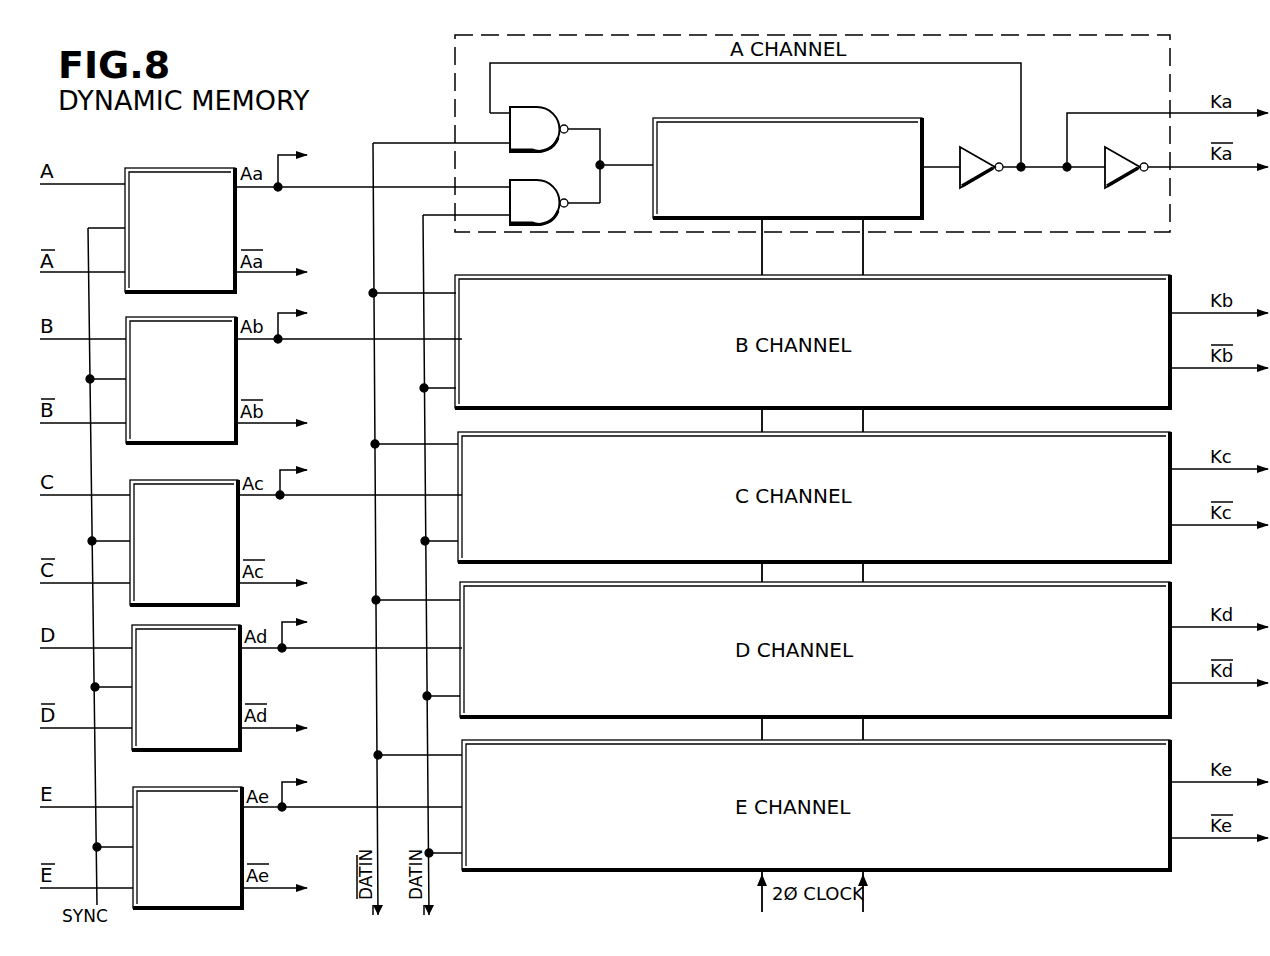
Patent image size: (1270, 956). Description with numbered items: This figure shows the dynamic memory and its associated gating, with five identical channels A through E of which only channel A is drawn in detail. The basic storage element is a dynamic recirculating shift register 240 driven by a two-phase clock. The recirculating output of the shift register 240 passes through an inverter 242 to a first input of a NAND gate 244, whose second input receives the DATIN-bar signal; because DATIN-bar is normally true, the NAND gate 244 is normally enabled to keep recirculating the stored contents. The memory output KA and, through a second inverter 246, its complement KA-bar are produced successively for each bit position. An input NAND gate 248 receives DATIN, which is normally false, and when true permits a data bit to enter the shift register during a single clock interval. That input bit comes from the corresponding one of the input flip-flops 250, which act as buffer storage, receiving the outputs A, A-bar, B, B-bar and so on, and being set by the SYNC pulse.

The dynamic recirculating shift register 240 is at (803, 179).
The inverter 242 is at (984, 180).
The NAND gate 244 is at (580, 106).
The inverter 246 is at (1131, 180).
The input NAND gate 248 is at (574, 180).
The input flip-flops 250 is at (207, 136).